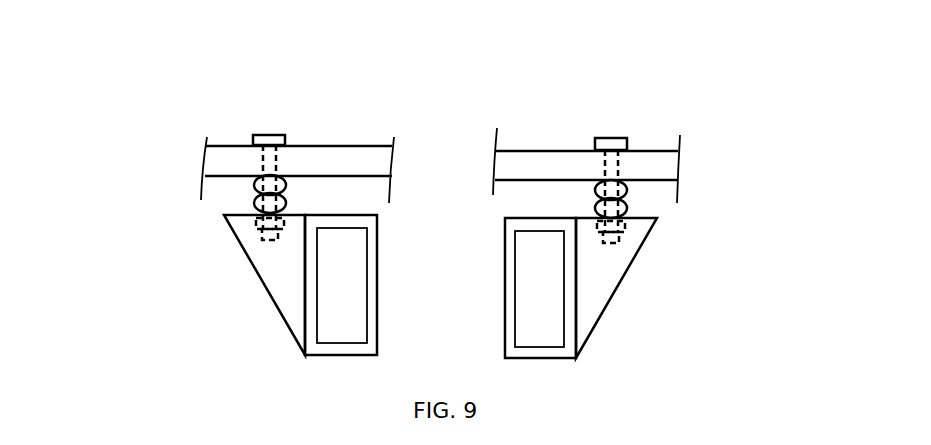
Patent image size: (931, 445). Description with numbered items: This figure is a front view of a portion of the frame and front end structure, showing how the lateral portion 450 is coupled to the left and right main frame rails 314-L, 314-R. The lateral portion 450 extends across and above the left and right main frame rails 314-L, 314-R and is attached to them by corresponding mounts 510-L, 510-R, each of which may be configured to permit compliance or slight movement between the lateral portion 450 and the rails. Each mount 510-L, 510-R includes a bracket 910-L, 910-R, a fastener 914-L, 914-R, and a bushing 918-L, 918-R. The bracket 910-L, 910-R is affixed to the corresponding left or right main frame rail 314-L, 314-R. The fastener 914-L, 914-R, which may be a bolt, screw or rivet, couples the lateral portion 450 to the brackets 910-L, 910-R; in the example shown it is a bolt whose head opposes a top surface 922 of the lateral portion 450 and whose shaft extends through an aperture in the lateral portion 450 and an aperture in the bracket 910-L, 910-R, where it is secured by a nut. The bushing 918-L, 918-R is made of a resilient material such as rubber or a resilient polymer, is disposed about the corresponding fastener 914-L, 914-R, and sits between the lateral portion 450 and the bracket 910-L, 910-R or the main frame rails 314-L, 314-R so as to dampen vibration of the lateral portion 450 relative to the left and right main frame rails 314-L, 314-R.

The top surface 922 is at (360, 147).
The lateral portion 450 is at (653, 163).
The fastener 914-R is at (266, 130).
The fastener 914-L is at (617, 137).
The bushing 918-R is at (287, 187).
The bushing 918-L is at (587, 195).
The mount 510-R is at (214, 283).
The mount 510-L is at (661, 294).
The bracket 910-R is at (277, 312).
The bracket 910-L is at (617, 297).
The right main frame rail 314-R is at (340, 355).
The left main frame rail 314-L is at (535, 358).